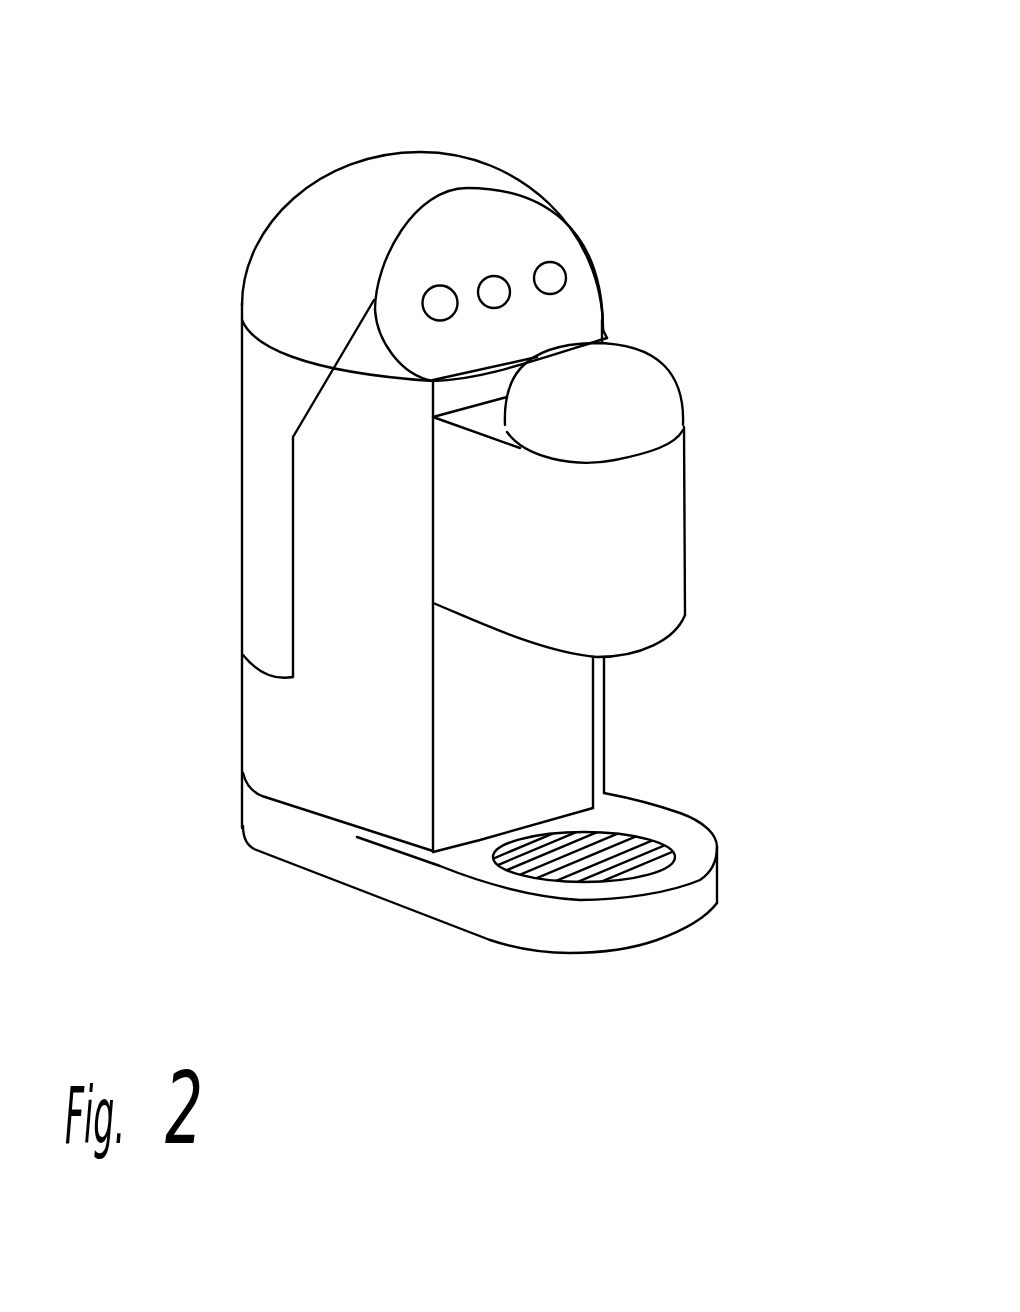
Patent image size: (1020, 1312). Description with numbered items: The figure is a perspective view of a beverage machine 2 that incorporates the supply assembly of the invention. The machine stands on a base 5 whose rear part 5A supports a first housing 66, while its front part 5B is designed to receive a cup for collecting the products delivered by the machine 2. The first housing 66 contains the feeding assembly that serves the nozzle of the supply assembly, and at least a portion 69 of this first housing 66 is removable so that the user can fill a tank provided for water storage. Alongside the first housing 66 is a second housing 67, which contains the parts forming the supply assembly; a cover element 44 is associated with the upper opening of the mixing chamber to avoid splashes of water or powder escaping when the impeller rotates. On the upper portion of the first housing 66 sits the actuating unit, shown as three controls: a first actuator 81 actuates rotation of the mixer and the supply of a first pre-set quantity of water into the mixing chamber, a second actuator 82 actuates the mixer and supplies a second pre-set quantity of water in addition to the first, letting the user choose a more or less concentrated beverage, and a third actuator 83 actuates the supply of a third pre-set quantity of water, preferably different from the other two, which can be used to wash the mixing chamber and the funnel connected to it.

The beverage machine 2 is at (717, 114).
The base 5 is at (452, 942).
The rear part 5A is at (310, 860).
The front part 5B is at (665, 918).
The cover element 44 is at (643, 388).
The first housing 66 is at (258, 720).
The second housing 67 is at (667, 537).
The removable portion 69 is at (250, 424).
The first actuator 81 is at (435, 298).
The second actuator 82 is at (494, 291).
The third actuator 83 is at (560, 279).